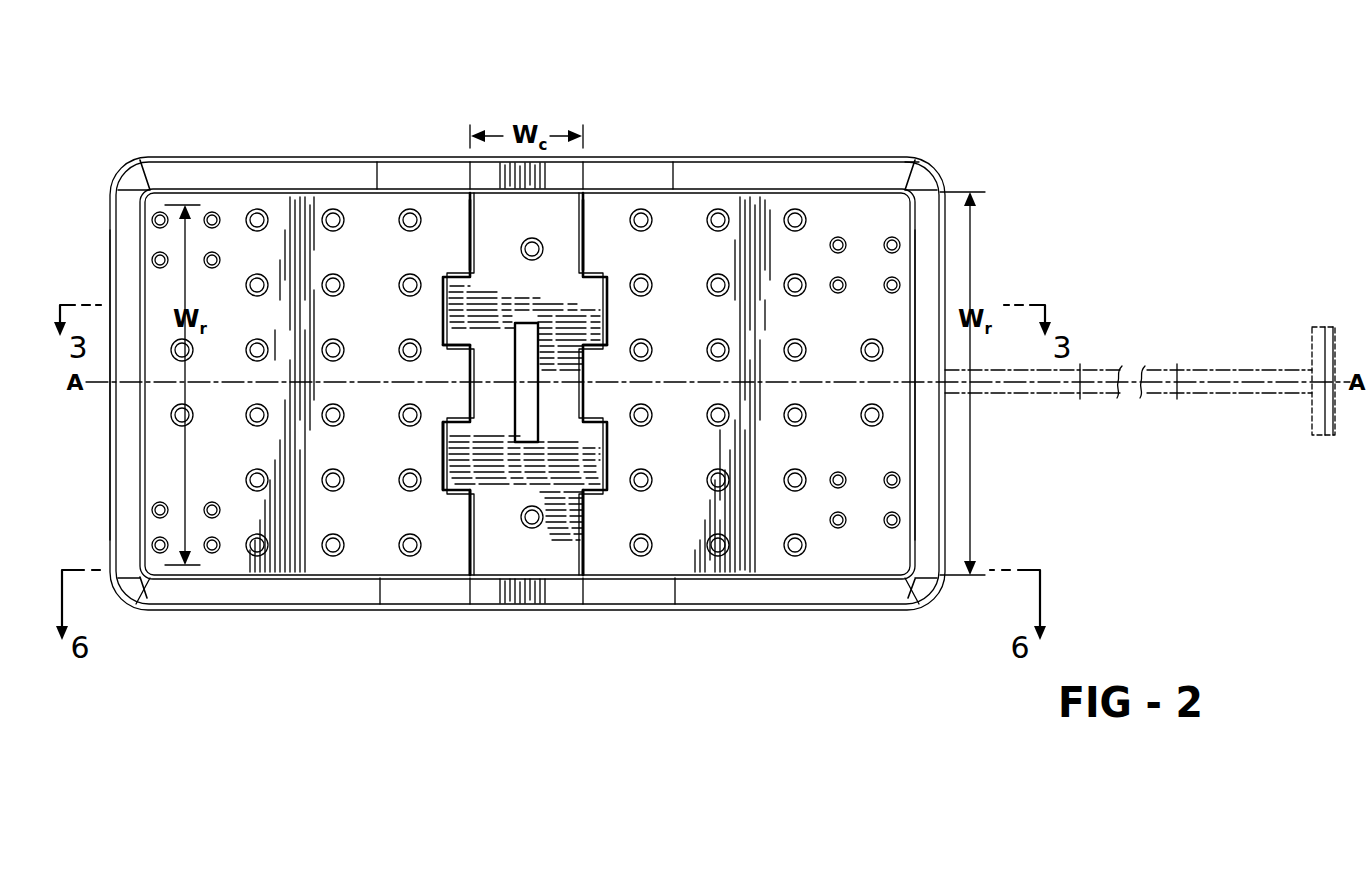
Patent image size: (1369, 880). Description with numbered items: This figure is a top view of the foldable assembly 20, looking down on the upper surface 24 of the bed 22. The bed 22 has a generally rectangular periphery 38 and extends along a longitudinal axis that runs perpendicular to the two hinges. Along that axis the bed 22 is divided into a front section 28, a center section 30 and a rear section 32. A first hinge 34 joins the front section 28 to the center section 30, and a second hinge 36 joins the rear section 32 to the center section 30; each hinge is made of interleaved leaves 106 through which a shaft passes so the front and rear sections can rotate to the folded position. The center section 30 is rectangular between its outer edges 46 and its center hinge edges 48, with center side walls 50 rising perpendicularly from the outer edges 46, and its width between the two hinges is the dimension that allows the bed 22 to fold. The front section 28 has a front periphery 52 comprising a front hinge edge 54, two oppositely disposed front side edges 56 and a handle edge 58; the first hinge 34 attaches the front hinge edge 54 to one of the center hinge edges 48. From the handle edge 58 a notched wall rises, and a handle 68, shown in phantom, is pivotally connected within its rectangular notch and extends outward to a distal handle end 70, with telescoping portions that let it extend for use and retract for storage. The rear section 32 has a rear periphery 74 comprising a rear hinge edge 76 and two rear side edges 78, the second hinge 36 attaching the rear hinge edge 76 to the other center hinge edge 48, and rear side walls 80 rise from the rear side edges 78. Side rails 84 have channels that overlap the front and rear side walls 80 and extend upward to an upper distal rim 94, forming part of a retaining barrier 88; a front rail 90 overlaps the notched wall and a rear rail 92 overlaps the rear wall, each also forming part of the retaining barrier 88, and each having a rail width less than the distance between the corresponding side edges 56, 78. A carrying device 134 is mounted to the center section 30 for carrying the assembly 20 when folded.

The assembly 20 is at (1113, 497).
The bed 22 is at (930, 595).
The upper surface 24 is at (867, 543).
The front section 28 is at (782, 557).
The center section 30 is at (557, 562).
The rear section 32 is at (440, 532).
The first hinge 34 is at (592, 532).
The second hinge 36 is at (447, 580).
The periphery 38 is at (905, 165).
The outer edges 46 is at (583, 215).
The center hinge edges 48 is at (465, 205).
The center side walls 50 is at (483, 170).
The front periphery 52 is at (815, 196).
The front hinge edge 54 is at (612, 320).
The front side edges 56 is at (738, 196).
The handle edge 58 is at (905, 435).
The handle 68 is at (1212, 397).
The distal handle end 70 is at (1318, 437).
The rear periphery 74 is at (203, 573).
The rear hinge edge 76 is at (462, 297).
The rear side edges 78 is at (255, 200).
The rear side walls 80 is at (292, 605).
The side rails 84 is at (190, 160).
The retaining barrier 88 is at (910, 293).
The front rail 90 is at (935, 345).
The rear rail 92 is at (133, 580).
The upper distal rim 94 is at (218, 173).
The interleaved leaves 106 is at (450, 468).
The carrying device 134 is at (530, 418).